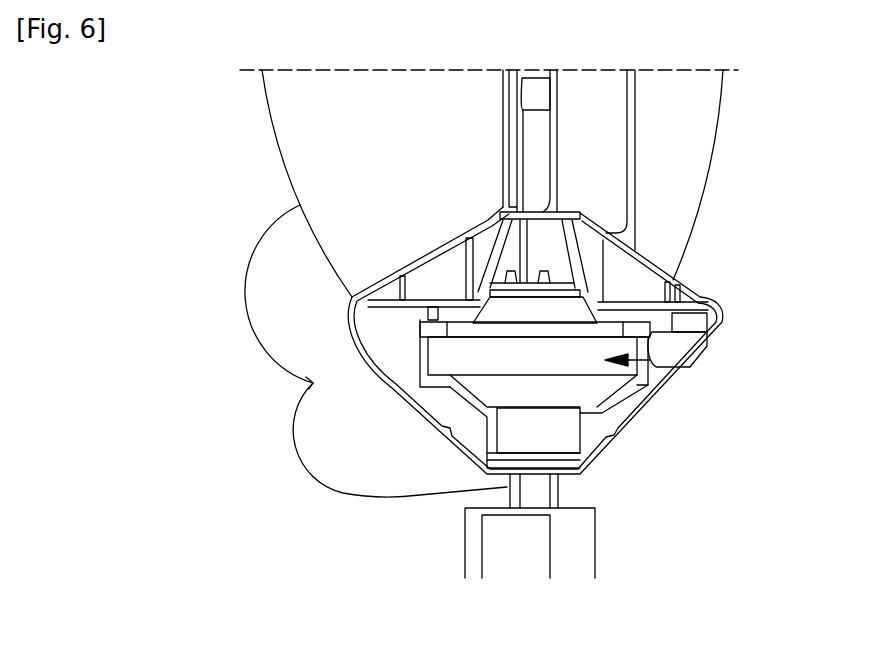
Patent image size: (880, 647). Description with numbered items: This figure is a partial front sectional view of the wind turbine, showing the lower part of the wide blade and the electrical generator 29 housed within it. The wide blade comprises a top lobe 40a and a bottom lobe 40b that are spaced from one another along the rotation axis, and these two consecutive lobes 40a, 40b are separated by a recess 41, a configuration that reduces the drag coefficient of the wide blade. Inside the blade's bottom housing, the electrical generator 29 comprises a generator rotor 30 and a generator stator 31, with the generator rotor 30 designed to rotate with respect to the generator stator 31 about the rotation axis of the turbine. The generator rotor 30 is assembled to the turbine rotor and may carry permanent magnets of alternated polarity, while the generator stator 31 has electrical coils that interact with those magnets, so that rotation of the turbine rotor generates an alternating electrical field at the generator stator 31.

The top lobe 40a is at (282, 283).
The bottom lobe 40b is at (362, 460).
The recess 41 is at (313, 383).
The generator rotor 30 is at (567, 310).
The electrical generator 29 is at (640, 357).
The generator stator 31 is at (558, 488).